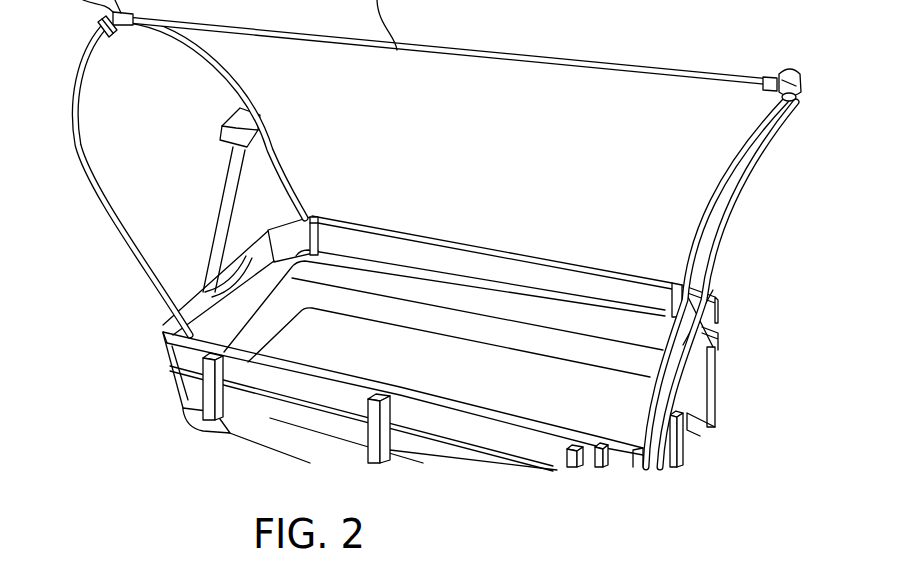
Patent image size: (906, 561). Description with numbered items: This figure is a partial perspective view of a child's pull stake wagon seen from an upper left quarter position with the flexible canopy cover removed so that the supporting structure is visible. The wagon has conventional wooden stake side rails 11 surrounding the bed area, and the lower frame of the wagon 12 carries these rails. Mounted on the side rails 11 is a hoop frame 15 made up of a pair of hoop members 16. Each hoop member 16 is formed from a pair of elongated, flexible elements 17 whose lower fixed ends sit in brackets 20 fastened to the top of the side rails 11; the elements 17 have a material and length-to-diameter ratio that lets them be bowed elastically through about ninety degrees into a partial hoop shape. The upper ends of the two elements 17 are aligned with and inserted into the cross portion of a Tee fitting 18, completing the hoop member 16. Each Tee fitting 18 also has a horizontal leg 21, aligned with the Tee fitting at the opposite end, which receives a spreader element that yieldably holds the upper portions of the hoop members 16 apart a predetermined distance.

The side rails 11 is at (480, 230).
The base frame 12 is at (232, 447).
The hoop frame 15 is at (625, 52).
The hoop member 16 is at (428, 243).
The elongated flexible element 17 is at (233, 80).
The Tee fitting 18 is at (800, 76).
The bracket 20 is at (313, 206).
The horizontal leg 21 is at (770, 80).